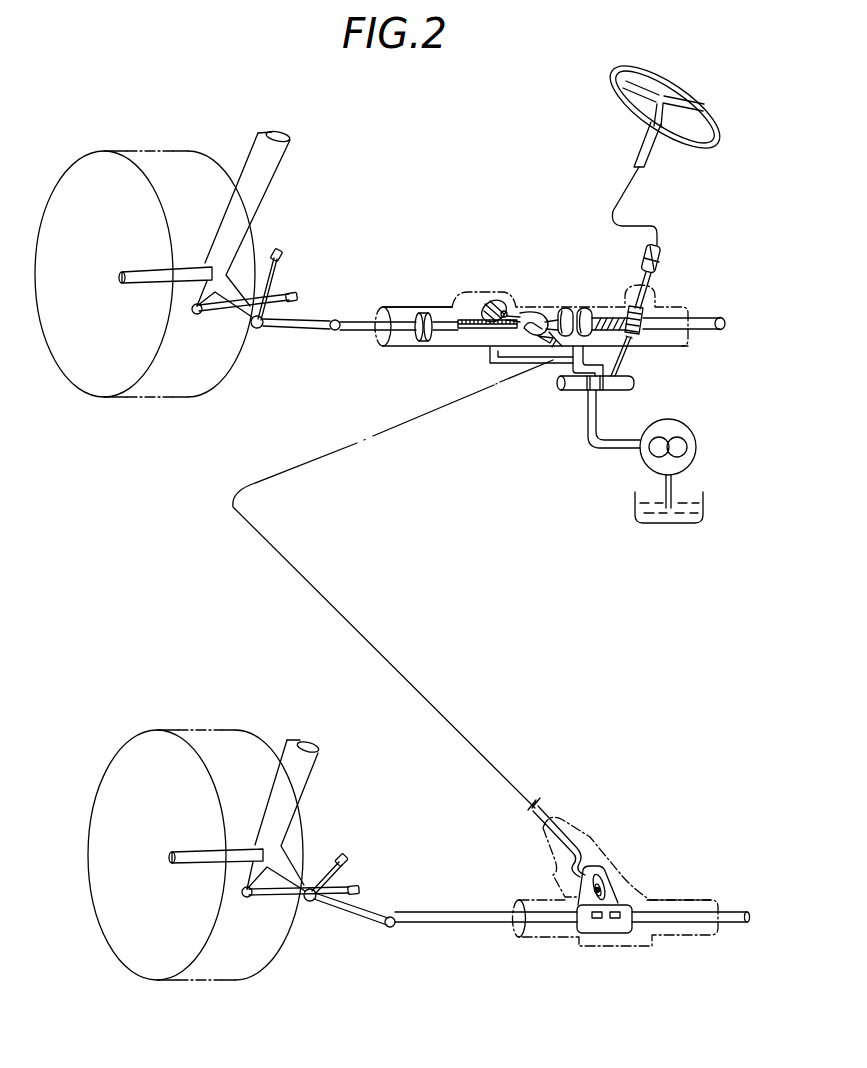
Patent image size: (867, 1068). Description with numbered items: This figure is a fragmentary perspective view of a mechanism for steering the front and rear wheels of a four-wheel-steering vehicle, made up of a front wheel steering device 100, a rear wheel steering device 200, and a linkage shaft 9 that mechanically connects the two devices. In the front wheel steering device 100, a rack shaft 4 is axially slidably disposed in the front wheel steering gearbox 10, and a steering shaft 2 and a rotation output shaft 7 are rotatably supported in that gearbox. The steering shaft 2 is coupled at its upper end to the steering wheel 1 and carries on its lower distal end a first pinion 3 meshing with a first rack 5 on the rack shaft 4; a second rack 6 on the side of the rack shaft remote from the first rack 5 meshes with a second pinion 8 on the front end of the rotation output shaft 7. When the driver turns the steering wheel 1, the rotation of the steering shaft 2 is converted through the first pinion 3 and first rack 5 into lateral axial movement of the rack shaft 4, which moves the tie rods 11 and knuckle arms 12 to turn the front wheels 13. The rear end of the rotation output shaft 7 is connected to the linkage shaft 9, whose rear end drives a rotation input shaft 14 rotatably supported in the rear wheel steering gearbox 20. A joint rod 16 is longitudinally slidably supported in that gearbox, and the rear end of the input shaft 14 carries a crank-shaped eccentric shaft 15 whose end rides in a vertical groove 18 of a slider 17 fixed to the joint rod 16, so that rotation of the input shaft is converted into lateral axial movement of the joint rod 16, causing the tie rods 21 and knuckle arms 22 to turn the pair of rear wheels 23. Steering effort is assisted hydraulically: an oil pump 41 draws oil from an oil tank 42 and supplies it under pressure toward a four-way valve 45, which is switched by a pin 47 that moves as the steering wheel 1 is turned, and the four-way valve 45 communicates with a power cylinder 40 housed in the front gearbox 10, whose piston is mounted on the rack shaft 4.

The steering wheel 1 is at (700, 100).
The steering shaft 2 is at (642, 292).
The first pinion 3 is at (664, 318).
The rack shaft 4 is at (712, 318).
The first rack 5 is at (604, 313).
The second rack 6 is at (458, 318).
The rotation output shaft 7 is at (514, 308).
The second pinion 8 is at (499, 300).
The linkage shaft 9 is at (243, 538).
The front wheel steering gearbox 10 is at (404, 348).
The tie rods 11 is at (288, 328).
The knuckle arms 12 is at (233, 300).
The front wheels 13 is at (102, 151).
The rotation input shaft 14 is at (560, 820).
The eccentric shaft 15 is at (567, 878).
The joint rod 16 is at (737, 911).
The slider 17 is at (600, 868).
The vertical groove 18 is at (605, 882).
The rear wheel steering gearbox 20 is at (680, 943).
The tie rods 21 is at (343, 913).
The knuckle arms 22 is at (298, 880).
The rear wheels 23 is at (178, 730).
The power cylinder 40 is at (405, 306).
The oil pump 41 is at (696, 444).
The oil tank 42 is at (691, 523).
The four-way valve 45 is at (563, 389).
The pin 47 is at (630, 356).
The front wheel steering device 100 is at (503, 207).
The rear wheel steering device 200 is at (570, 962).